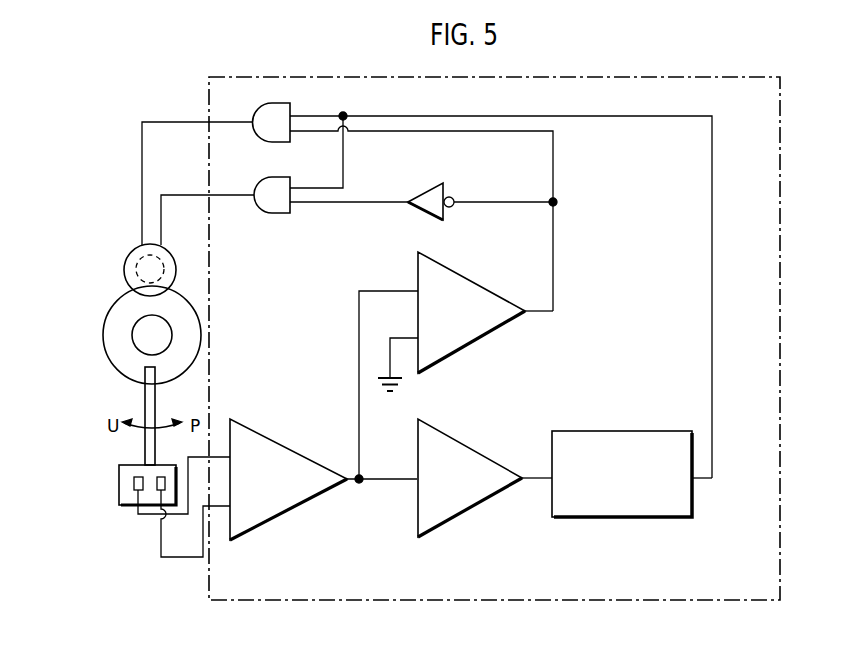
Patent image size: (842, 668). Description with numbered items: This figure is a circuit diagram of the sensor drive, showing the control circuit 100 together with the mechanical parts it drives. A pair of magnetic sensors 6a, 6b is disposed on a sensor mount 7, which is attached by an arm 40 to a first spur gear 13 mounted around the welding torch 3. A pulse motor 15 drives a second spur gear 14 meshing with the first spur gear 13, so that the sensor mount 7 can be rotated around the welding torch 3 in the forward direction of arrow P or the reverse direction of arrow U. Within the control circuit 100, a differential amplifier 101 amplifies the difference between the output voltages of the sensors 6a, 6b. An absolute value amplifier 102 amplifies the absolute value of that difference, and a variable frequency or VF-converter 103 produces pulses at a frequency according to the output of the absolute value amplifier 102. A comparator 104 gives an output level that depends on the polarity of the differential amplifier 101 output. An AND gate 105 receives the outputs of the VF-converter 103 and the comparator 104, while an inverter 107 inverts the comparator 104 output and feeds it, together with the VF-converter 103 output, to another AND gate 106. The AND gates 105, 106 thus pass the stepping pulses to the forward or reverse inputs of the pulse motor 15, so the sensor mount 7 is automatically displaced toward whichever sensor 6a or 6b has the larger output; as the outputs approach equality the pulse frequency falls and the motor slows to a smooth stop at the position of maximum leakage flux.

The sensor drive or control circuit 100 is at (781, 455).
The differential amplifier 101 is at (297, 450).
The absolute value amplifier 102 is at (460, 518).
The variable frequency or VF-converter 103 is at (593, 431).
The comparator 104 is at (472, 280).
The AND gate 105 is at (264, 103).
The AND gate 106 is at (262, 177).
The inverter 107 is at (440, 183).
The welding torch 3 is at (134, 318).
The first spur gear 13 is at (112, 338).
The second spur gear 14 is at (131, 258).
The pulse motor 15 is at (170, 254).
The arm 40 is at (145, 390).
The magnetic sensor 6a is at (133, 478).
The magnetic sensor 6b is at (157, 490).
The sensor mount 7 is at (132, 504).